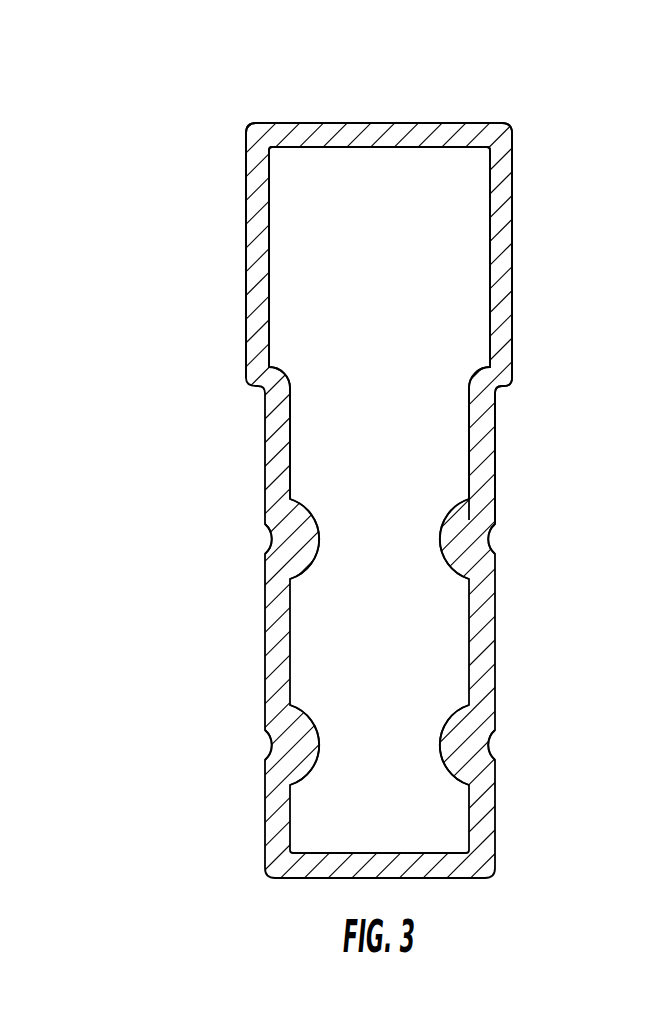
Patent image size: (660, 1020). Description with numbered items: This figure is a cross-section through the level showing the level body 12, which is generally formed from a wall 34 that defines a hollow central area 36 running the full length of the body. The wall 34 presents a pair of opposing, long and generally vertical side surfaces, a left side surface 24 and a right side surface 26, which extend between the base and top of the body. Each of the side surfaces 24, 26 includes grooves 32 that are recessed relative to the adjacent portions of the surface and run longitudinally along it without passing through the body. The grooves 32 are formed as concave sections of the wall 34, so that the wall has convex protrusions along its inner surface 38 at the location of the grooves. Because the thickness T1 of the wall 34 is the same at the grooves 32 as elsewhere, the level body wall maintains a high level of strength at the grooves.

The level body 12 is at (237, 159).
The left side surface 24 is at (247, 290).
The right side surface 26 is at (515, 254).
The grooves 32 is at (272, 534).
The wall 34 is at (513, 178).
The hollow central area 36 is at (400, 226).
The inner surface 38 is at (270, 313).
The thickness T1 is at (408, 420).